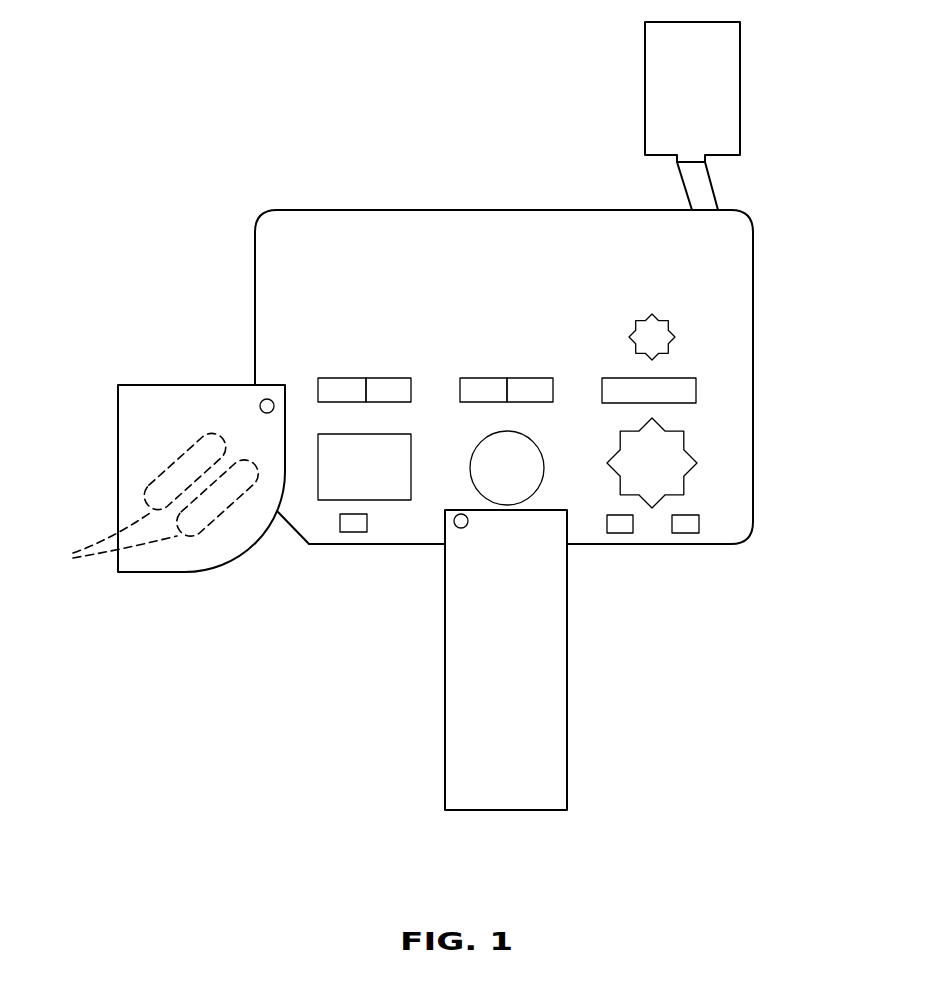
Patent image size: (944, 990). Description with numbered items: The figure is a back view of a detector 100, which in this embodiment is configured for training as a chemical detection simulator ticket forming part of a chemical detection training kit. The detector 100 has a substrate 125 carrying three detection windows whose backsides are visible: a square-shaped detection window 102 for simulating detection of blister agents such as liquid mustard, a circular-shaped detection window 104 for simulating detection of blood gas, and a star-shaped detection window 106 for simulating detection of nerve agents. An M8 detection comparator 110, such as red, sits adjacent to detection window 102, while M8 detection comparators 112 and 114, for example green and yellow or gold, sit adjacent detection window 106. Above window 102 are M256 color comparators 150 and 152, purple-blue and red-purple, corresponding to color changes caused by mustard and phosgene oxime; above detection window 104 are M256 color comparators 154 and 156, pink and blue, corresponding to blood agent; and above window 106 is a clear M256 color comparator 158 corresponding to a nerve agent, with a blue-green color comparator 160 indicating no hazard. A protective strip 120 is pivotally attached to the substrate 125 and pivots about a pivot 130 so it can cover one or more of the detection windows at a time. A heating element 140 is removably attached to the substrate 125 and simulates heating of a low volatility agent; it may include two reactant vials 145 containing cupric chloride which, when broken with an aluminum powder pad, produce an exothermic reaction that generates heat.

The detector 100 is at (374, 142).
The detection window 102 is at (332, 500).
The detection window 104 is at (540, 446).
The detection window 106 is at (685, 450).
The M8 detection comparator 110 is at (351, 533).
The M8 detection comparator 112 is at (622, 534).
The M8 detection comparator 114 is at (686, 534).
The protective strip 120 is at (568, 683).
The substrate 125 is at (754, 287).
The pivot 130 is at (455, 524).
The heating element 140 is at (118, 437).
The reactant vials 145 is at (149, 506).
The M256 color comparator 150 is at (340, 378).
The M256 color comparator 152 is at (385, 378).
The M256 color comparator 154 is at (482, 378).
The M256 color comparator 156 is at (527, 378).
The M256 color comparator 158 is at (617, 377).
The color comparator 160 is at (658, 318).